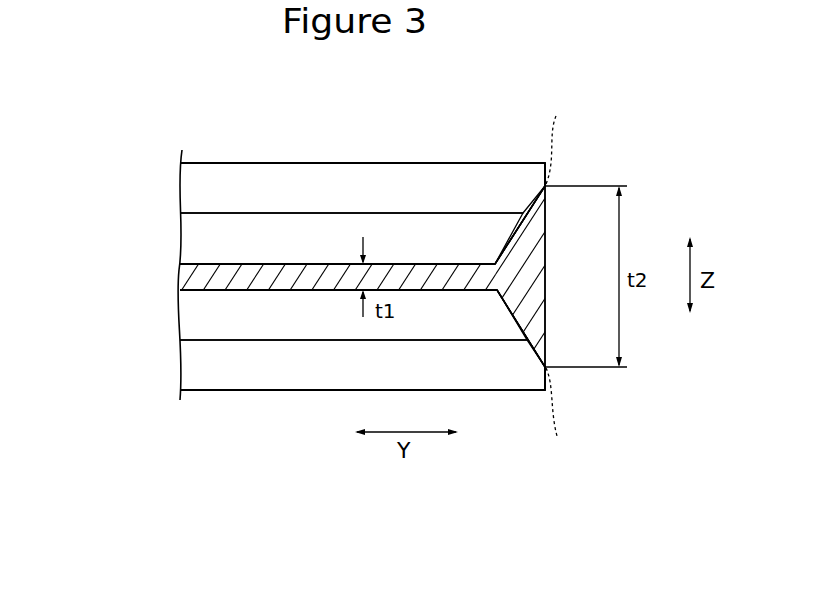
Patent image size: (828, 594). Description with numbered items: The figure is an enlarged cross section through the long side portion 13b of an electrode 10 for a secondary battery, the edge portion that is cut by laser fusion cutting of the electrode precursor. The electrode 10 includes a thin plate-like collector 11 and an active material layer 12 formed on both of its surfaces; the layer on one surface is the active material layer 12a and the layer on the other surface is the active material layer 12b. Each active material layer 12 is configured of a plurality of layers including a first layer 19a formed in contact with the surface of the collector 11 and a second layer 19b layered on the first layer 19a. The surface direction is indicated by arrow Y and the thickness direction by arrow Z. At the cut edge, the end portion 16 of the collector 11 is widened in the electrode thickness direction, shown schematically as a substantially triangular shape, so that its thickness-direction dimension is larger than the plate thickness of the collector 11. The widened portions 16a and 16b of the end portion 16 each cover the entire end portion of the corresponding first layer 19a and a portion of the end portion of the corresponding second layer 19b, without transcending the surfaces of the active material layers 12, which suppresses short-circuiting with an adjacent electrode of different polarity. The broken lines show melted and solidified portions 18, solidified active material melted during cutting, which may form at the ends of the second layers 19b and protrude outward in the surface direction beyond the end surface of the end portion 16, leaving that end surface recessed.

The electrode 10 is at (414, 146).
The collector 11 is at (180, 280).
The active material layer 12 is at (95, 167).
The active material layer 12a is at (285, 213).
The active material layer 12b is at (285, 340).
The long side portion 13b is at (566, 195).
The end portion 16 is at (556, 282).
The widened portion 16a is at (533, 233).
The widened portion 16b is at (528, 318).
The melted and solidified portion 18 is at (557, 277).
The first layer 19a is at (180, 241).
The second layer 19b is at (180, 190).